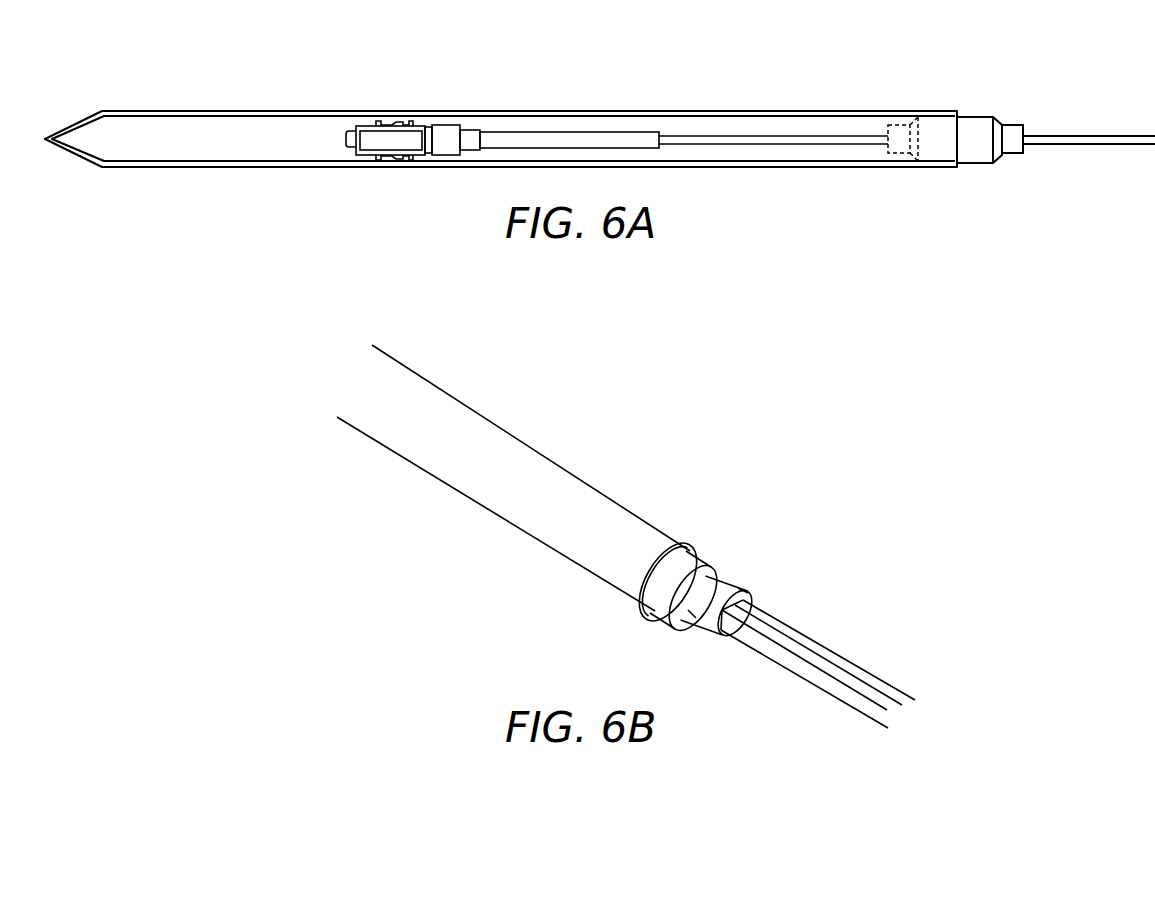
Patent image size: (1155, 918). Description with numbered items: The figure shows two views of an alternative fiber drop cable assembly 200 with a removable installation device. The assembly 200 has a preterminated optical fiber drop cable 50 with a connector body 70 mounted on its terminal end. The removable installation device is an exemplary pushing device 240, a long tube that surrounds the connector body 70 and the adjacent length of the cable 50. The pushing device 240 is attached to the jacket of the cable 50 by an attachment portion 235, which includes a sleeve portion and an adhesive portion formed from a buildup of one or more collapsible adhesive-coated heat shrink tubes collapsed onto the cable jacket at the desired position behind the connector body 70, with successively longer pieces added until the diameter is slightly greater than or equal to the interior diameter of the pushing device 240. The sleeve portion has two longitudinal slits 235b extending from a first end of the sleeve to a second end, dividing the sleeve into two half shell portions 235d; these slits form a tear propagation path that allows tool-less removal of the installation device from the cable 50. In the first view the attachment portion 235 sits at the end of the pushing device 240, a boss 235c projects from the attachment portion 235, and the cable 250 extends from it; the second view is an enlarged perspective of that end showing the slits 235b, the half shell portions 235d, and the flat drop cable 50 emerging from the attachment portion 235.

In FIG. 6A, the cable assembly 200 is at (690, 58).
In FIG. 6A, the pushing device 240 is at (273, 108).
In FIG. 6B, the pushing device 240 is at (650, 508).
In FIG. 6A, the connector body 70 is at (412, 96).
In FIG. 6A, the attachment portion 235 is at (982, 116).
In FIG. 6B, the attachment portion 235 is at (692, 559).
In FIG. 6A, the end cap boss 235c is at (1007, 125).
In FIG. 6A, the drive rod 250 is at (1116, 136).
In FIG. 6B, the longitudinal slits 235b is at (727, 590).
In FIG. 6B, the half shell portions 235d is at (745, 588).
In FIG. 6B, the preterminated optical fiber drop cable 50 is at (843, 660).